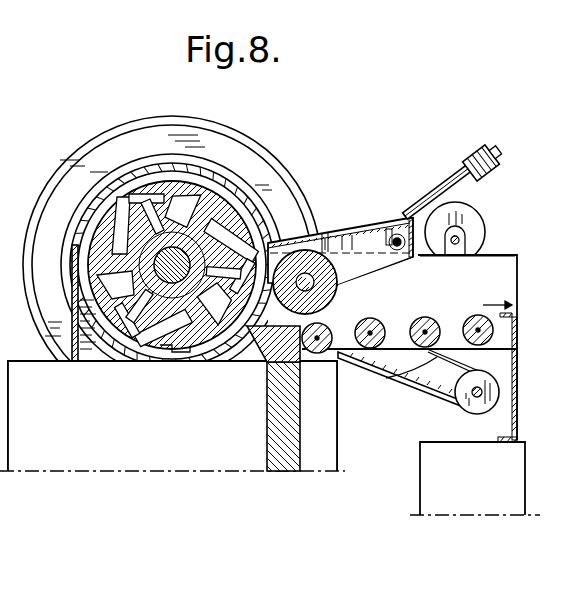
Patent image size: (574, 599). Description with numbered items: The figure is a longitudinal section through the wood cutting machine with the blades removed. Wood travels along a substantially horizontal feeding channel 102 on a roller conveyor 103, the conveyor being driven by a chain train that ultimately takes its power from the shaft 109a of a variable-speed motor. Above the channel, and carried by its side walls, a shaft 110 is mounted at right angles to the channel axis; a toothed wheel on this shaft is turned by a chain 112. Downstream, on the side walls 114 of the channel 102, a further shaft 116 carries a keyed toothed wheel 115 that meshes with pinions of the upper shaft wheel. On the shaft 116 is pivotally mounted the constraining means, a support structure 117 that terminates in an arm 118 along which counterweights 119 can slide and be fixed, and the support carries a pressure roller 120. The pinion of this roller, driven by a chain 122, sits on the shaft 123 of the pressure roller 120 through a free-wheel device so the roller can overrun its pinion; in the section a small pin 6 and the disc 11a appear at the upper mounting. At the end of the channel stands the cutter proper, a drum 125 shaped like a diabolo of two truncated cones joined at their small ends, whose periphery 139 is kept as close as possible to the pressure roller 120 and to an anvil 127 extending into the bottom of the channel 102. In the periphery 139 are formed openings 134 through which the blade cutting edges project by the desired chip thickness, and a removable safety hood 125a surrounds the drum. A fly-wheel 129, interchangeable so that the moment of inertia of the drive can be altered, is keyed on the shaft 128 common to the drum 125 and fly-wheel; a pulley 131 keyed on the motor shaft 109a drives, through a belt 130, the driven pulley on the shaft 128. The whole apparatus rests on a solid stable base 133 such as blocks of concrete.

The pin 6 is at (391, 228).
The disc 11a is at (462, 214).
The wood feeding channel 102 is at (517, 305).
The roller conveyor 103 is at (385, 320).
The motor shaft 109a is at (452, 384).
The shaft 110 is at (458, 238).
The chain 112 is at (488, 246).
The side walls 114 is at (503, 273).
The toothed wheel 115 is at (397, 240).
The shaft 116 is at (405, 222).
The support structure 117 is at (327, 242).
The arm 118 is at (443, 187).
The counterweights 119 is at (468, 150).
The pressure roller 120 is at (296, 278).
The chain 122 is at (352, 238).
The shaft of the pressure roller 123 is at (316, 283).
The drum 125 is at (222, 208).
The safety hood 125a is at (202, 166).
The anvil 127 is at (262, 346).
The shaft of the diabolo 128 is at (128, 344).
The fly-wheel 129 is at (151, 116).
The belt 130 is at (382, 373).
The pulley 131 is at (490, 390).
The base 133 is at (243, 421).
The openings 134 is at (167, 351).
The periphery of the drum 139 is at (125, 195).